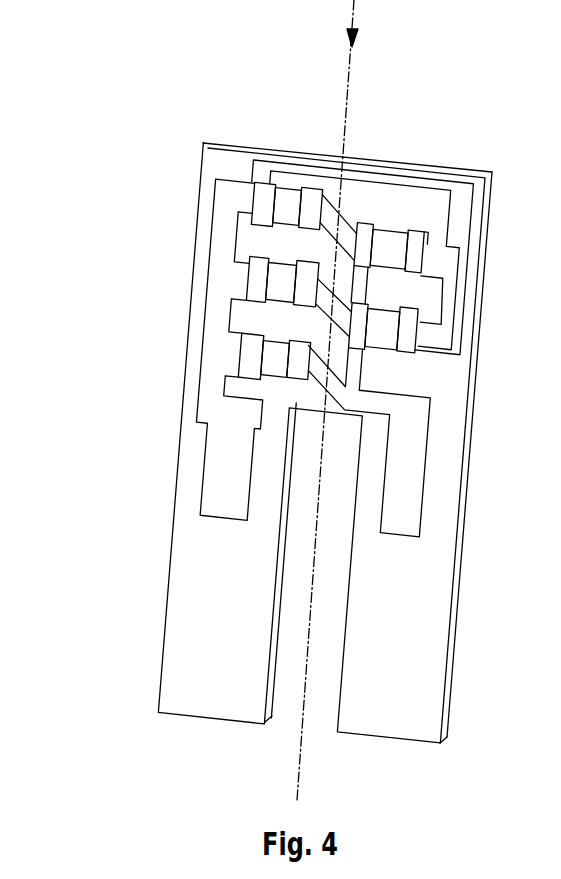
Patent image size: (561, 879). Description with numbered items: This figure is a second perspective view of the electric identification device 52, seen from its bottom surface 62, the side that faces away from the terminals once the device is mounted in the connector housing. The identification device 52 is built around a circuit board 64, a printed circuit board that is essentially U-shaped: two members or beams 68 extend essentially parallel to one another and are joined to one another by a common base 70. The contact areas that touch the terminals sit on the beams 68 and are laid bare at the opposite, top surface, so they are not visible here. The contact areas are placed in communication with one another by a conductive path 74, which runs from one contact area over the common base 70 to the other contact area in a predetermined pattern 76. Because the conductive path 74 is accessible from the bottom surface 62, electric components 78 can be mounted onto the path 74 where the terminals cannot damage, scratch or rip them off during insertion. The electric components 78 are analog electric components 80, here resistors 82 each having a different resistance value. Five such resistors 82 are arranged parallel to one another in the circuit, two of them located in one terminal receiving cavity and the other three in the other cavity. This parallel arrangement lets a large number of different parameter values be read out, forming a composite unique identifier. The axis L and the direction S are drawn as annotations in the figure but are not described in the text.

The electric identification device 52 is at (103, 85).
The bottom surface 62 is at (456, 377).
The circuit board 64 is at (432, 210).
The beams 68 is at (197, 622).
The common base 70 is at (357, 200).
The conductive path 74 is at (370, 401).
The predetermined pattern 76 is at (224, 237).
The electric components 78 is at (286, 196).
The analog electric components 80 is at (278, 195).
The resistors 82 is at (331, 239).
The sensing direction S is at (360, 10).
The longitudinal axis L is at (350, 72).